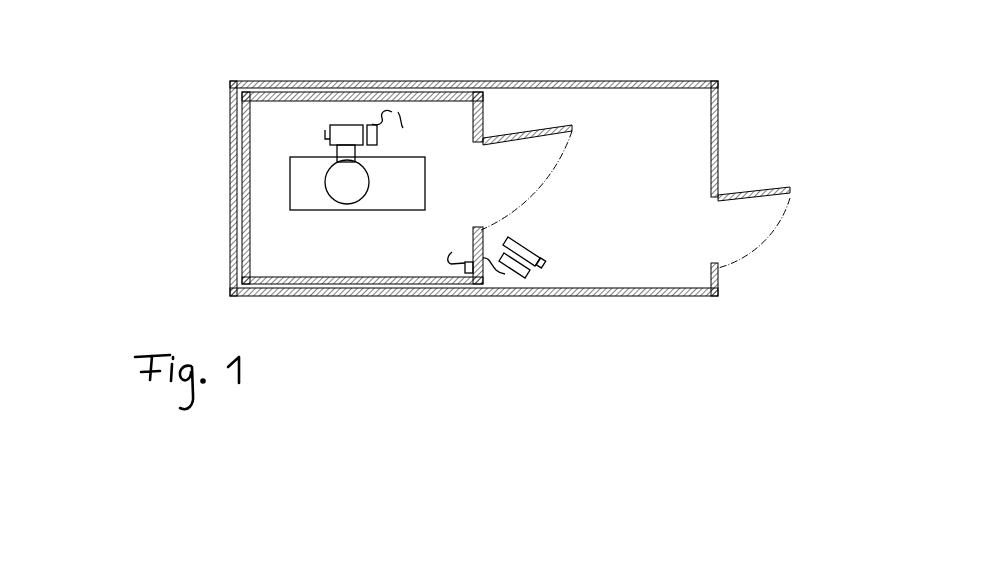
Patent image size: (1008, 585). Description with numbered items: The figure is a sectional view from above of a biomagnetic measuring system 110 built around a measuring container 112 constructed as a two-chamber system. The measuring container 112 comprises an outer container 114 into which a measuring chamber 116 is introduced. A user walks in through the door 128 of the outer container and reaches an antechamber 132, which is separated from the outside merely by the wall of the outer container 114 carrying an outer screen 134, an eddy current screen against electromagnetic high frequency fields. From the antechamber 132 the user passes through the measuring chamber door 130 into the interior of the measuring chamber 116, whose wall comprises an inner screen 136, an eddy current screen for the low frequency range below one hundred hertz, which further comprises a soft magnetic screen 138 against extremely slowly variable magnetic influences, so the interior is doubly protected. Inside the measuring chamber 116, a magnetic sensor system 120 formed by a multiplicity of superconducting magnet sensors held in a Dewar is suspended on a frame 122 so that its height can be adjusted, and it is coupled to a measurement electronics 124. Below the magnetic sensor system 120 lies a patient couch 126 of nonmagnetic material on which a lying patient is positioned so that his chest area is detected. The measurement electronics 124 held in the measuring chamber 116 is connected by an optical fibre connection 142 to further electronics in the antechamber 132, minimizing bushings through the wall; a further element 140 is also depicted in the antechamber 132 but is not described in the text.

The biomagnetic measuring system 110 is at (668, 44).
The measuring container 112 is at (502, 83).
The outer container 114 is at (753, 92).
The outer screen 134 is at (714, 188).
The measuring chamber 116 is at (278, 197).
The inner screen 136 is at (246, 218).
The magnetic screen 138 is at (278, 197).
The magnetic sensor system 120 is at (335, 245).
The frame 122 is at (341, 135).
The measurement electronics 124 is at (424, 138).
The patient couch 126 is at (397, 244).
The door of the outer container 128 is at (756, 264).
The measuring chamber door 130 is at (546, 205).
The antechamber 132 is at (665, 181).
The camera 140 is at (583, 263).
The optical fibre connection 142 is at (403, 46).